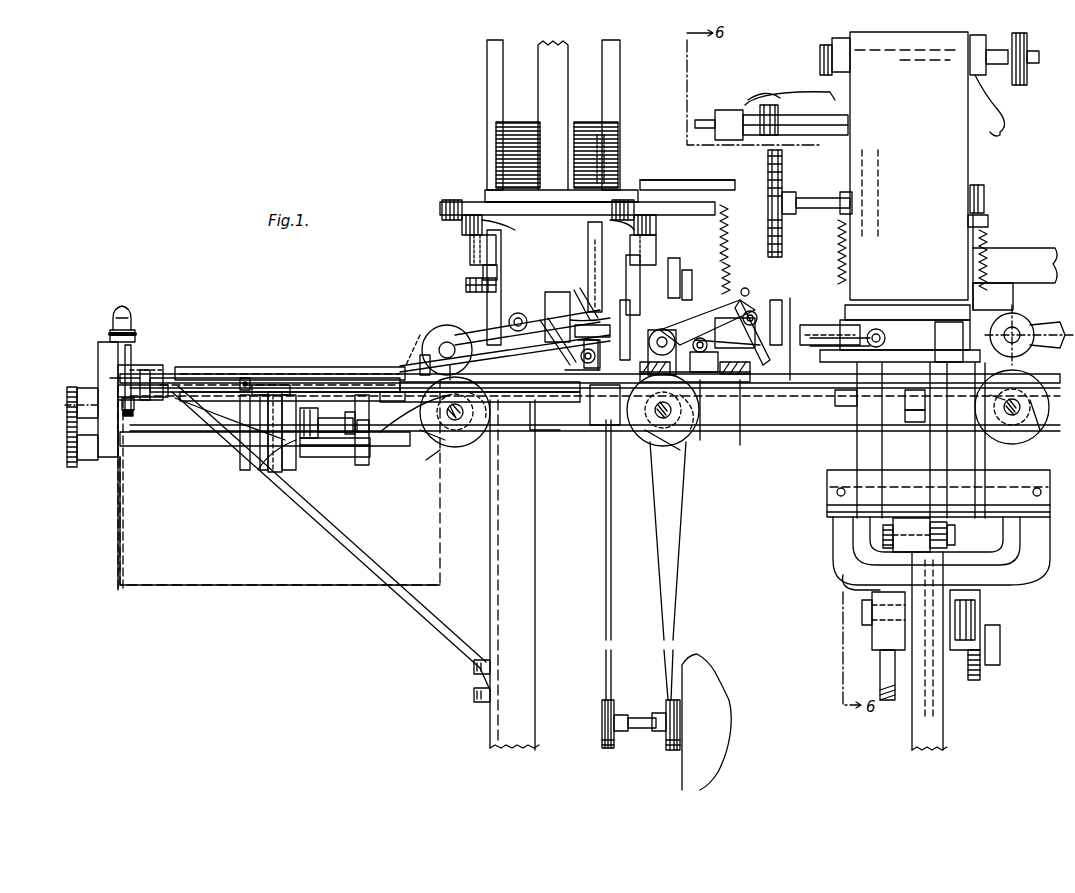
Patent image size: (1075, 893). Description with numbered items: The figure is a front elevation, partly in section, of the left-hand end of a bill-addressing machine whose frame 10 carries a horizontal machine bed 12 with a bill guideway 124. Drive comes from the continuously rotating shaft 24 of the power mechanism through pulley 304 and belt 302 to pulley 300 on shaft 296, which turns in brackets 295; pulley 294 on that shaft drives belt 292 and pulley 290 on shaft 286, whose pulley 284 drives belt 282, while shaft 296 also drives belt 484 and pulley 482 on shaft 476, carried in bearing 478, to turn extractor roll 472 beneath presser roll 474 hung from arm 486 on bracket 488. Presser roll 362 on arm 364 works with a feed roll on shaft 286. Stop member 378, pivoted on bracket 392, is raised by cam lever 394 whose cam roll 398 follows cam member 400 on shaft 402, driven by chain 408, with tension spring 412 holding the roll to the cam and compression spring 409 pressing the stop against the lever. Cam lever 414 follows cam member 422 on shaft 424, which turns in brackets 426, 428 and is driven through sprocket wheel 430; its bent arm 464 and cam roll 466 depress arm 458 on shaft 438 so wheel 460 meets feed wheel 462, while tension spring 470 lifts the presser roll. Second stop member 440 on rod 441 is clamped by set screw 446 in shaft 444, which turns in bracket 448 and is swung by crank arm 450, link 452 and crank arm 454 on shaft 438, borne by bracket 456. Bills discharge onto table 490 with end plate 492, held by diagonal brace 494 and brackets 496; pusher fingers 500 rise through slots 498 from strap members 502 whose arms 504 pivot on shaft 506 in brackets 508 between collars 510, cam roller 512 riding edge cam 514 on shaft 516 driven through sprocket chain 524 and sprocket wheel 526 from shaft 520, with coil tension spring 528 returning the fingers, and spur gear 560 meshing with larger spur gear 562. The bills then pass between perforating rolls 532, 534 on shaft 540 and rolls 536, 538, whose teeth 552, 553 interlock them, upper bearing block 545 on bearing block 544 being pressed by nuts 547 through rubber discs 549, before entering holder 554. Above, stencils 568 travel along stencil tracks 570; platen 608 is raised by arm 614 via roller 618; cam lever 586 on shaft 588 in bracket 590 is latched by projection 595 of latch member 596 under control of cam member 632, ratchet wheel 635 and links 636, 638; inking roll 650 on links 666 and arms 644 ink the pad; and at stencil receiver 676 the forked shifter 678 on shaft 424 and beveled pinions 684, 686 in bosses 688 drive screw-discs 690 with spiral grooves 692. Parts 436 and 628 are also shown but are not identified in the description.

The frame 10 is at (505, 588).
The machine bed 12 is at (787, 384).
The shaft 24 is at (642, 730).
The bill guideway 124 is at (845, 392).
The endless belt 282 is at (1045, 430).
The pulley 284 is at (1005, 420).
The horizontal shaft 286 is at (1012, 418).
The pulley 290 is at (1015, 445).
The endless belt 292 is at (835, 432).
The pulley 294 is at (672, 410).
The brackets 295 is at (675, 438).
The shaft 296 is at (690, 412).
The pulley 300 is at (735, 420).
The endless belt 302 is at (680, 480).
The pulley 304 is at (700, 692).
The presser roll 362 is at (1018, 315).
The arm 364 is at (1055, 322).
The stop member 378 is at (860, 332).
The vertical bracket 392 is at (722, 380).
The cam lever 394 is at (745, 400).
The cam roll 398 is at (800, 330).
The cam member 400 is at (780, 300).
The horizontal shaft 402 is at (795, 300).
The endless chain 408 is at (606, 522).
The compression spring 409 is at (716, 360).
The tension spring 412 is at (730, 238).
The cam lever 414 is at (718, 318).
The cam member 422 is at (752, 310).
The horizontal shaft 424 is at (692, 285).
The upstanding bracket 426 is at (497, 270).
The upstanding bracket 428 is at (620, 262).
The sprocket wheel 430 is at (640, 265).
The link 436 is at (720, 352).
The shaft 438 is at (755, 300).
The second stop member 440 is at (662, 372).
The supporting rod 441 is at (630, 330).
The shaft 444 is at (590, 372).
The set screw 446 is at (580, 355).
The vertical bracket 448 is at (583, 400).
The crank arm 450 is at (575, 332).
The link 452 is at (610, 318).
The upstanding crank arm 454 is at (750, 292).
The bracket 456 is at (728, 364).
The arm 458 is at (702, 338).
The rotatable wheel 460 is at (600, 300).
The feed wheel 462 is at (630, 445).
The bent arm 464 is at (728, 282).
The cam roll 466 is at (680, 270).
The tension spring 470 is at (630, 240).
The feed roll 472 is at (458, 445).
The presser roll 474 is at (440, 340).
The horizontal shaft 476 is at (440, 445).
The bearing 478 is at (430, 465).
The pulley 482 is at (497, 422).
The endless belt 484 is at (570, 436).
The arm 486 is at (535, 335).
The vertical bracket member 488 is at (555, 292).
The table 490 is at (165, 383).
The vertical plate 492 is at (140, 378).
The diagonal brace member 494 is at (330, 530).
The brackets 496 is at (430, 420).
The slots 498 is at (178, 400).
The pusher fingers 500 is at (185, 372).
The strap members 502 is at (245, 392).
The arms 504 is at (310, 409).
The shaft 506 is at (334, 458).
The brackets 508 is at (258, 470).
The collars 510 is at (280, 470).
The cam roller 512 is at (350, 420).
The edge cam 514 is at (355, 452).
The shaft 516 is at (369, 426).
The shaft 520 is at (180, 446).
The endless sprocket chain 524 is at (285, 388).
The sprocket wheel 526 is at (275, 395).
The coil tension spring 528 is at (245, 398).
The feeding and perforating roll 532 is at (370, 422).
The feed roll 534 is at (455, 335).
The upper perforating roll 536 is at (130, 350).
The lower roll 538 is at (125, 430).
The shaft 540 is at (232, 392).
The bearing block 544 is at (118, 384).
The upper bearing block 545 is at (98, 352).
The nuts 547 is at (125, 310).
The soft rubber discs 549 is at (110, 333).
The perforating teeth 552 is at (135, 365).
The teeth 553 is at (134, 408).
The receiving hopper 554 is at (135, 520).
The spur gear 560 is at (67, 403).
The larger spur gear 562 is at (67, 433).
The stencils 568 is at (590, 120).
The stencil tracks 570 is at (900, 350).
The cam lever 586 is at (1005, 542).
The shaft 588 is at (833, 516).
The supporting bracket 590 is at (855, 468).
The projection 595 is at (995, 665).
The latch member 596 is at (990, 575).
The platen 608 is at (925, 395).
The arm 614 is at (925, 455).
The roller 618 is at (925, 415).
The knob 628 is at (878, 672).
The cam member 632 is at (975, 680).
The ratchet wheel 635 is at (950, 655).
The link 636 is at (900, 545).
The link 638 is at (883, 532).
The pivoted arms 644 is at (848, 128).
The inking roll 650 is at (920, 312).
The links 666 is at (955, 322).
The stencil receiver 676 is at (487, 145).
The forked shifter 678 is at (545, 310).
The beveled pinion gear 684 is at (466, 285).
The beveled pinion gear 686 is at (483, 272).
The bosses 688 is at (470, 245).
The screw-discs 690 is at (442, 206).
The spiral grooves 692 is at (462, 225).